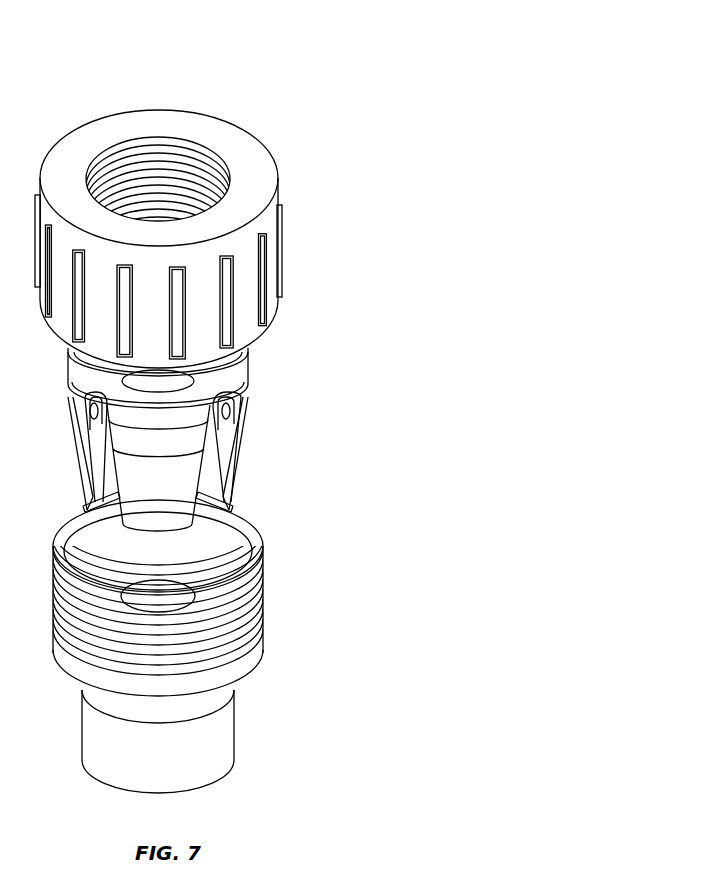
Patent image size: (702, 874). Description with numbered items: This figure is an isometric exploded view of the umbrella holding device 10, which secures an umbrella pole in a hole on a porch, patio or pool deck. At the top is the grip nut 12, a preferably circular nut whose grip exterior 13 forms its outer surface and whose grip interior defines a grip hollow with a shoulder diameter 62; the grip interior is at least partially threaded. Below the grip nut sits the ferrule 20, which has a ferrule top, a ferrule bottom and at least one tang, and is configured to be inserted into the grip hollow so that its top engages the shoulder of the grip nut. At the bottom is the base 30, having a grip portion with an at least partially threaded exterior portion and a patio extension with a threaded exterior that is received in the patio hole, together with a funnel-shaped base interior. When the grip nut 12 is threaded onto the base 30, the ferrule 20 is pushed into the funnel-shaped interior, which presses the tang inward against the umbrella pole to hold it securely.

The umbrella holding device 10 is at (168, 90).
The grip nut 12 is at (270, 153).
The grip exterior 13 is at (262, 223).
The shoulder diameter 62 is at (192, 152).
The ferrule 20 is at (250, 378).
The base 30 is at (257, 650).